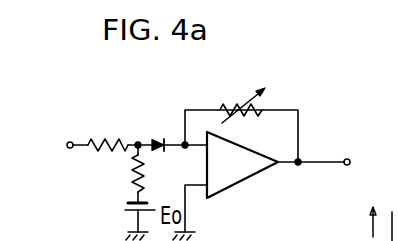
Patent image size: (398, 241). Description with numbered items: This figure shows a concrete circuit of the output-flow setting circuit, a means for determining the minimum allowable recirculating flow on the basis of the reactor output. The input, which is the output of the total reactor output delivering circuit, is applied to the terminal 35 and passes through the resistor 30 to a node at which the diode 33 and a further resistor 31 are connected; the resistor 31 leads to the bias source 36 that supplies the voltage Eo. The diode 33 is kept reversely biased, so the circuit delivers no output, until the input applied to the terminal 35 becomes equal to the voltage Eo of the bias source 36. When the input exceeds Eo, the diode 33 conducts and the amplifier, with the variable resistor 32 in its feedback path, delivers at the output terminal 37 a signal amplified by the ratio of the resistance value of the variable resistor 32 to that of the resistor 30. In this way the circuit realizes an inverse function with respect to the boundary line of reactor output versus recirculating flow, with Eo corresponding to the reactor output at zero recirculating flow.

The resistor 30 is at (110, 139).
The resistor to capacitor 31 is at (134, 179).
The variable resistor 32 is at (236, 100).
The diode 33 is at (156, 138).
The terminal 35 is at (67, 145).
The bias source 36 is at (128, 203).
The output terminal 37 is at (350, 160).